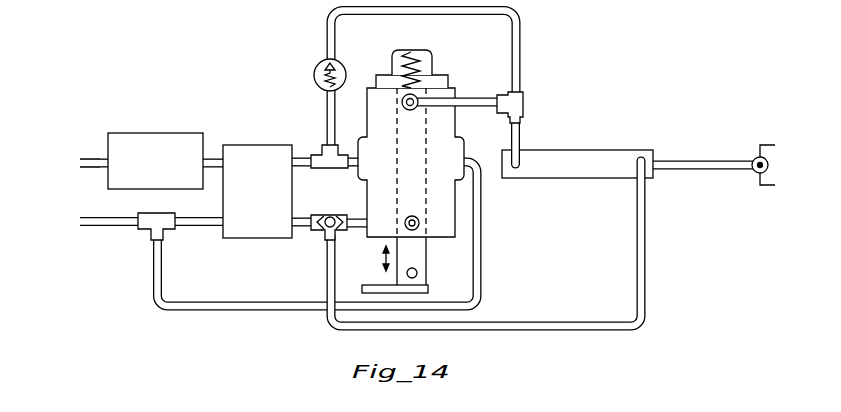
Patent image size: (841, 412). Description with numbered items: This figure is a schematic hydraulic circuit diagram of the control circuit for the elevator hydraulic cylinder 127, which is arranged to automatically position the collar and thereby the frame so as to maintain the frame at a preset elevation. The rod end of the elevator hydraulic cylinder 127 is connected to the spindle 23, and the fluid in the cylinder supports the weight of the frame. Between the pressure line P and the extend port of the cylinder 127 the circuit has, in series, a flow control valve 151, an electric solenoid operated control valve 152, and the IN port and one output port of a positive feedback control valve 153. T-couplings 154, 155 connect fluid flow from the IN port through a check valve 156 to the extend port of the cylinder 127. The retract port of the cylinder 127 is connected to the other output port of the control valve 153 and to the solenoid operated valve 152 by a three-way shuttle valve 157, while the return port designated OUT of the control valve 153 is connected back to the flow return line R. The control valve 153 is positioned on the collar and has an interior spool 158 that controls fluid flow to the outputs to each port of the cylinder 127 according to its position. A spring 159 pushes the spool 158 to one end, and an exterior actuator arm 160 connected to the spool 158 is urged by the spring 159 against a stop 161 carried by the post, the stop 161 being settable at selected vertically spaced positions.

The spindle 23 is at (765, 144).
The elevator hydraulic cylinder 127 is at (567, 157).
The flow control valve 151 is at (172, 133).
The electric solenoid operated control valve 152 is at (252, 238).
The positive feedback control valve 153 is at (447, 130).
The T-coupling 154 is at (323, 150).
The T-coupling 155 is at (513, 104).
The check valve 156 is at (341, 64).
The three-way shuttle valve 157 is at (323, 238).
The spool 158 is at (428, 218).
The spring 159 is at (418, 64).
The exterior actuator arm 160 is at (425, 265).
The stop 161 is at (373, 285).
The pressure line P is at (94, 158).
The flow return line R is at (110, 228).